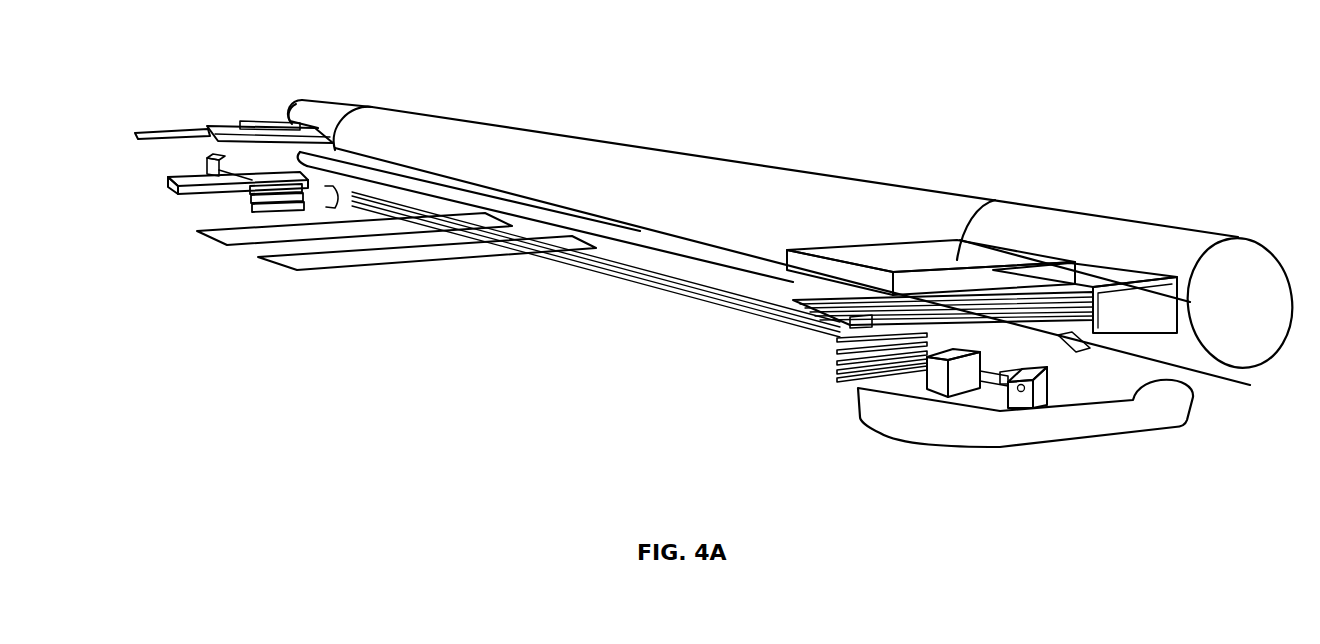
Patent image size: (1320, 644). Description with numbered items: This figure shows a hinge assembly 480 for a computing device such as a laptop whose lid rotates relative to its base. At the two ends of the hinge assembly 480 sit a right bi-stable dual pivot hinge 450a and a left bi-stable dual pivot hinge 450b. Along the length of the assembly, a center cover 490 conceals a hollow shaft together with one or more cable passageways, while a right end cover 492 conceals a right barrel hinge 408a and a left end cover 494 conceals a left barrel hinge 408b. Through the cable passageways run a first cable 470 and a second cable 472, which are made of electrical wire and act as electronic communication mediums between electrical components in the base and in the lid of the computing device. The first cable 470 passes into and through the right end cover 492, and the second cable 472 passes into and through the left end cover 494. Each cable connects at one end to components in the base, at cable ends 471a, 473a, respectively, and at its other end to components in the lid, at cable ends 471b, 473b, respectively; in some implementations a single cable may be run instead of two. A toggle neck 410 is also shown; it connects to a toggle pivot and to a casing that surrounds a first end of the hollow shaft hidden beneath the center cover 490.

The right bi-stable dual pivot hinge 450a is at (1138, 257).
The left bi-stable dual pivot hinge 450b is at (325, 69).
The right barrel hinge 408a is at (1268, 258).
The left barrel hinge 408b is at (305, 108).
The center cover 490 is at (388, 98).
The right end cover 492 is at (1247, 229).
The left end cover 494 is at (305, 95).
The hinge assembly 480 is at (334, 163).
The first cable 470 is at (391, 262).
The cable end 471a is at (262, 262).
The cable end 471b is at (838, 312).
The second cable 472 is at (175, 140).
The cable end 473a is at (199, 237).
The cable end 473b is at (132, 135).
The toggle neck 410 is at (1250, 385).